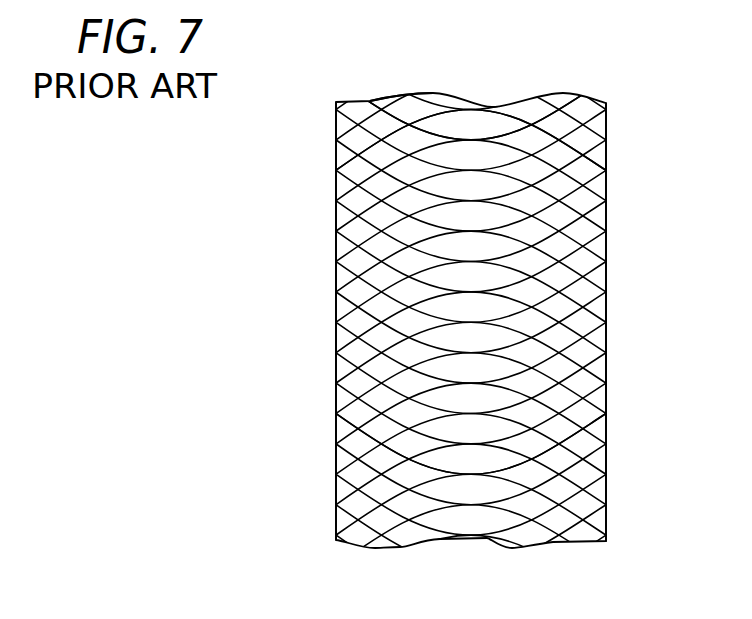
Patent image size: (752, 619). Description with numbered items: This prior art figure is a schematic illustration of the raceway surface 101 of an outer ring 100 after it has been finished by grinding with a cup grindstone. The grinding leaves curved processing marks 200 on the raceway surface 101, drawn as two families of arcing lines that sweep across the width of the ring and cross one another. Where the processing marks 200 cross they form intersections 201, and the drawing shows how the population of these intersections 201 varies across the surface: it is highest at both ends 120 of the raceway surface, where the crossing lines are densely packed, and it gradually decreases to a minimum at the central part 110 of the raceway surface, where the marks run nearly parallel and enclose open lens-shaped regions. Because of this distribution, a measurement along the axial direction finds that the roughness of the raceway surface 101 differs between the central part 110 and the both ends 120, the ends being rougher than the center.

The outer ring 100 is at (608, 517).
The raceway surface 101 is at (402, 112).
The central part of the raceway surface 110 is at (471, 116).
The both ends of the raceway surface 120 is at (333, 275).
The processing marks 200 is at (573, 367).
The intersections 201 is at (478, 170).